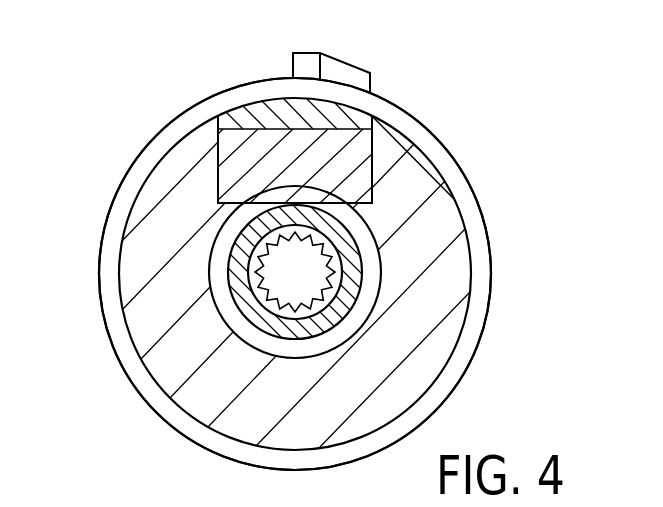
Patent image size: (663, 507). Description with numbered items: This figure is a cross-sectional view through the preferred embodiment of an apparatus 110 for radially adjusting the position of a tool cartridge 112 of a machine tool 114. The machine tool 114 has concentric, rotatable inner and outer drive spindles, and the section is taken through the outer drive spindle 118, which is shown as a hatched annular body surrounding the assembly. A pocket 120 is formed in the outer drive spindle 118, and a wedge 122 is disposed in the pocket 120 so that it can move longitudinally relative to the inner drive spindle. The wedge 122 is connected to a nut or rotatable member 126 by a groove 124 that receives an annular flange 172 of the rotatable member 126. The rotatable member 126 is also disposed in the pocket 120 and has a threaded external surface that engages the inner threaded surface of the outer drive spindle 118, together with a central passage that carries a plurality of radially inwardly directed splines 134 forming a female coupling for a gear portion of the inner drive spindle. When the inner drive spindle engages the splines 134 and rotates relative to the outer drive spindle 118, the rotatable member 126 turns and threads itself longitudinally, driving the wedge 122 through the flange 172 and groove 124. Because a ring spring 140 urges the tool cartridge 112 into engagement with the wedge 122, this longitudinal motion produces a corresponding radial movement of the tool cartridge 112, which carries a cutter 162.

The apparatus 110 is at (146, 66).
The tool cartridge 112 is at (252, 110).
The machine tool 114 is at (542, 72).
The outer drive spindle 118 is at (445, 205).
The pocket 120 is at (358, 170).
The wedge 122 is at (233, 152).
The groove 124 is at (275, 186).
The rotatable member 126 is at (267, 323).
The splines 134 is at (330, 295).
The ring spring 140 is at (488, 280).
The cutter 162 is at (308, 66).
The annular flange 172 is at (222, 298).